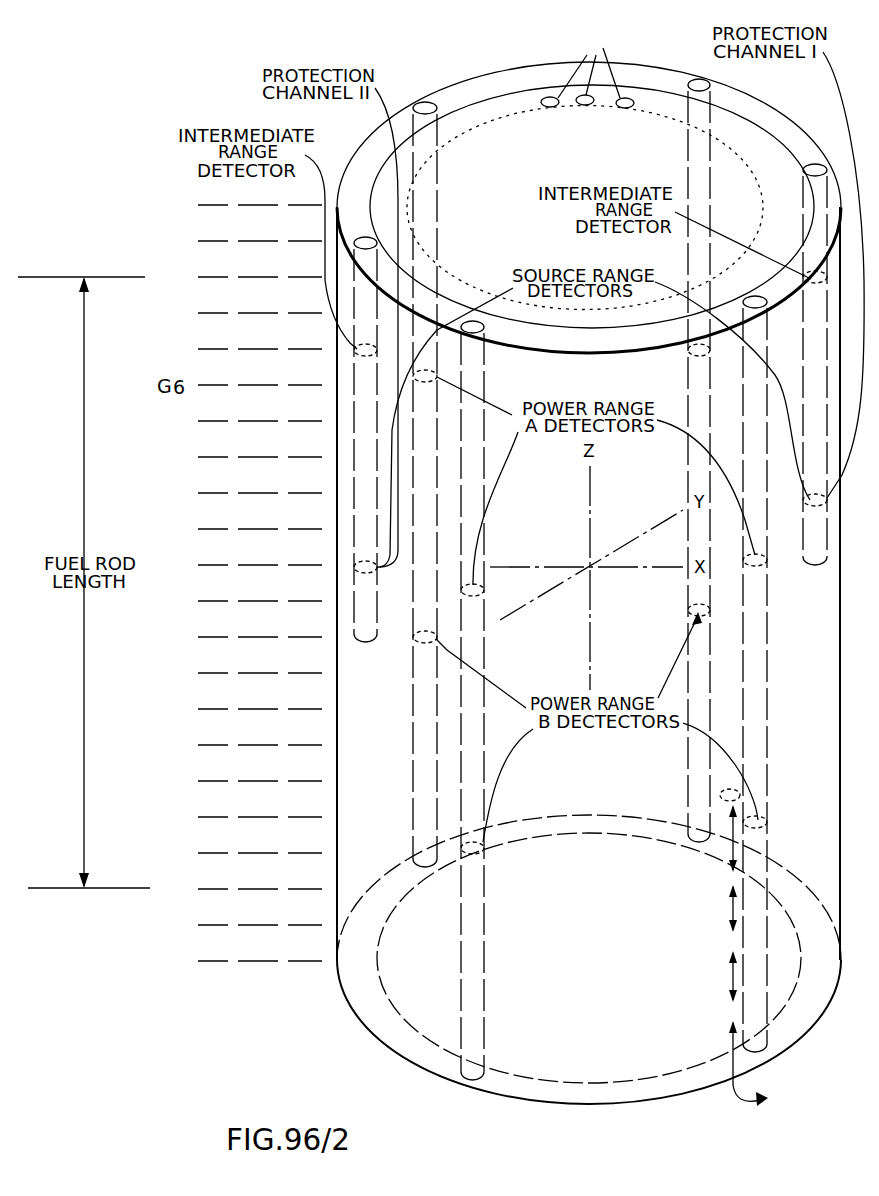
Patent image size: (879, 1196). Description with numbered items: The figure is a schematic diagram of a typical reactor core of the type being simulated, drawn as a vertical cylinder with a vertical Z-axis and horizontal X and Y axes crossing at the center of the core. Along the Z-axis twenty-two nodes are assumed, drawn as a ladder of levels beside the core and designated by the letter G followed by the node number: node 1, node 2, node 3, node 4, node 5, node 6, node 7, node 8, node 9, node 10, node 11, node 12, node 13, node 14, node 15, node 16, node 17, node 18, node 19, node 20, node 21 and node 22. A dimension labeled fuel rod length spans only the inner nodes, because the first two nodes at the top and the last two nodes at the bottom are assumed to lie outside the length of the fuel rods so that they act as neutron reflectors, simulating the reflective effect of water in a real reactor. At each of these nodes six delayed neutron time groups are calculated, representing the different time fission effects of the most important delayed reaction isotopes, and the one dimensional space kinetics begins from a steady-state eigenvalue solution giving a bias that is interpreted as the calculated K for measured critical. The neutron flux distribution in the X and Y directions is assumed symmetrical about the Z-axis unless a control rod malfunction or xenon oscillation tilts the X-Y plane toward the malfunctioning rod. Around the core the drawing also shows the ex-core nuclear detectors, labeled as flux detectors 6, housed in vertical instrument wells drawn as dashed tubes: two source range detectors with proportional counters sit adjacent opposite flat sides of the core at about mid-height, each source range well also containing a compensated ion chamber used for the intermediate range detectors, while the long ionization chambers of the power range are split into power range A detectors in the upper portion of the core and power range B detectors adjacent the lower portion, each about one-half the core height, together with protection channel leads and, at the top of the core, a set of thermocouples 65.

The thermocouples 65 is at (564, 62).
The flux detectors 6 is at (718, 796).
The node 1 is at (239, 206).
The node 2 is at (239, 242).
The node 3 is at (239, 278).
The node 4 is at (239, 314).
The node 5 is at (239, 350).
The node 7 is at (239, 422).
The node 8 is at (239, 458).
The node 9 is at (239, 494).
The node 10 is at (239, 530).
The node 11 is at (239, 566).
The node 12 is at (239, 602).
The node 13 is at (239, 638).
The node 14 is at (239, 674).
The node 15 is at (239, 710).
The node 16 is at (239, 746).
The node 17 is at (239, 782).
The node 18 is at (239, 818).
The node 19 is at (239, 854).
The node 20 is at (239, 890).
The node 21 is at (239, 926).
The node 22 is at (239, 962).